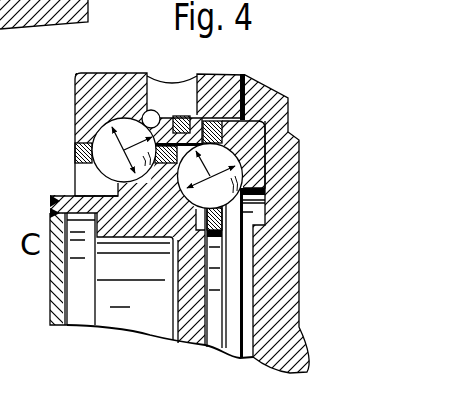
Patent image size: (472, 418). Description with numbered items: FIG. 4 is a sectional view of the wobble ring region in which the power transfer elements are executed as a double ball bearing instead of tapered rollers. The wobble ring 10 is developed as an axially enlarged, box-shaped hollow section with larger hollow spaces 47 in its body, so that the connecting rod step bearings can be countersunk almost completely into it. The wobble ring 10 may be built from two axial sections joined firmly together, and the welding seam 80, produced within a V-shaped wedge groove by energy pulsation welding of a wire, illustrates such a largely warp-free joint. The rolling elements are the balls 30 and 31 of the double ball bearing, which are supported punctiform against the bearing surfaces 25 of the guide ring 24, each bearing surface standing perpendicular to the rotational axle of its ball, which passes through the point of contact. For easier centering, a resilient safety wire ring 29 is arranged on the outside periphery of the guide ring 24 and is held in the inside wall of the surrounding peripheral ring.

The wobble ring 10 is at (50, 197).
The guide ring 24 is at (197, 125).
The bearing surface 25 is at (124, 118).
The resilient safety wire ring 29 is at (185, 118).
The ball 30 is at (103, 166).
The ball 31 is at (225, 201).
The hollow space 47 is at (77, 269).
The welding seam 80 is at (50, 213).